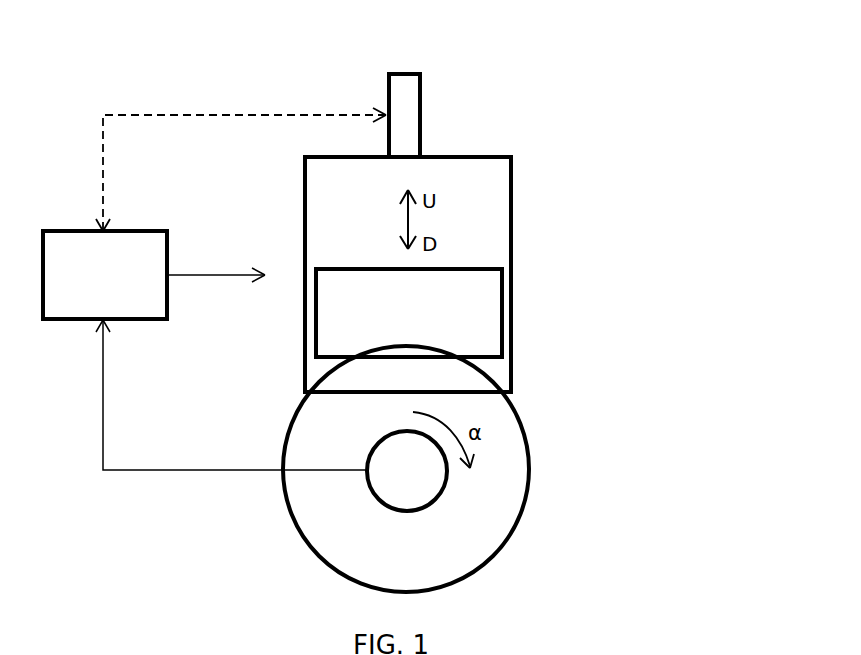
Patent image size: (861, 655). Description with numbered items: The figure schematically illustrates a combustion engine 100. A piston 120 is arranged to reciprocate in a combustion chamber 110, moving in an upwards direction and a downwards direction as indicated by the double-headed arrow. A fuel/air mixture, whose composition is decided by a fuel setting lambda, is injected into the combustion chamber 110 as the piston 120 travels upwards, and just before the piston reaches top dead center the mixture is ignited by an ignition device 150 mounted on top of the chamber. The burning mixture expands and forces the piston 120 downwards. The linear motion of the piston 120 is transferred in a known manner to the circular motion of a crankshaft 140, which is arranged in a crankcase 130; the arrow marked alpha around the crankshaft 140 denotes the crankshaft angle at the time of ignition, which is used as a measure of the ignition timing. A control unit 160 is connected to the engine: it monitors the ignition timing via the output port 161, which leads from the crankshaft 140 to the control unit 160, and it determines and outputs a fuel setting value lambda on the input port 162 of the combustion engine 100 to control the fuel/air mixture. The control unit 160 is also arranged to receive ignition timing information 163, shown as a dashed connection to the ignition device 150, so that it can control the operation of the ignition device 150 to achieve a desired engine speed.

The combustion engine 100 is at (638, 137).
The combustion chamber 110 is at (513, 205).
The piston 120 is at (409, 313).
The crankcase 130 is at (528, 443).
The crankshaft 140 is at (407, 471).
The ignition device 150 is at (395, 72).
The control unit 160 is at (105, 275).
The output port 161 is at (231, 395).
The input port 162 is at (216, 263).
The ignition timing information 163 is at (241, 160).